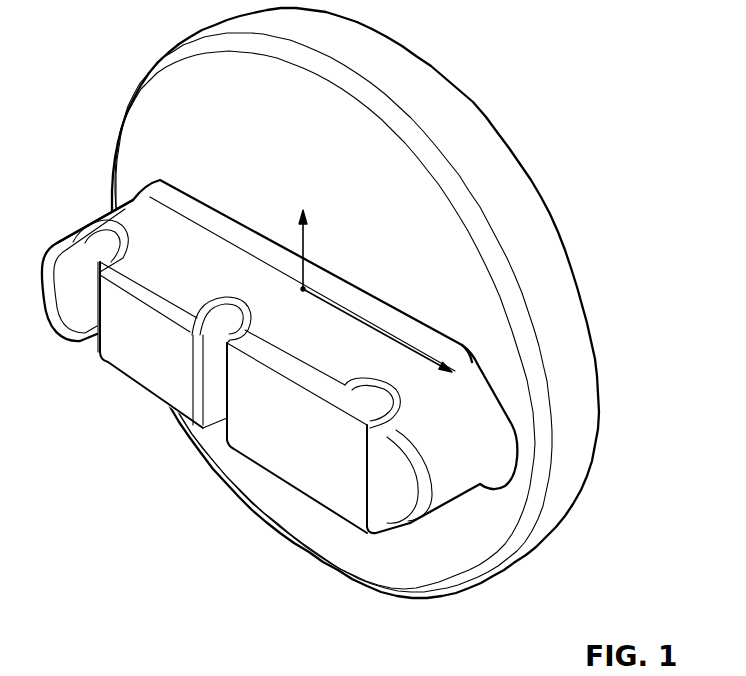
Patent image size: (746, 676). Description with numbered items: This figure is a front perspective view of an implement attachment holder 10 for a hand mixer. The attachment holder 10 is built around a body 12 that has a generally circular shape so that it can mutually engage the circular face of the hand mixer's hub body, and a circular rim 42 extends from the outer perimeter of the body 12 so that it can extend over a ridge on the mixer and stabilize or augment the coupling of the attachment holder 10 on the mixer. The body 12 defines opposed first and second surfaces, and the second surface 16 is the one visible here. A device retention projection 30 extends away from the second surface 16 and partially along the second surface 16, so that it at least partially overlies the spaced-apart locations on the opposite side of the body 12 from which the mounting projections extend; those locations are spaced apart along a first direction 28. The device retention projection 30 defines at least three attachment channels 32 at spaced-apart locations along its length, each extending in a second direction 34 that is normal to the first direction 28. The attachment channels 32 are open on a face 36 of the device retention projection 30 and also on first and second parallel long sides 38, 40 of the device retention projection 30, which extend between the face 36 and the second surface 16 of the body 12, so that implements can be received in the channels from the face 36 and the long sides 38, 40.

The implement attachment holder 10 is at (383, 318).
The body 12 is at (526, 307).
The second surface 16 is at (322, 156).
The first direction 28 is at (383, 333).
The device retention projection 30 is at (273, 500).
The attachment channels 32 is at (88, 330).
The second direction 34 is at (305, 250).
The face 36 is at (92, 295).
The first parallel long side 38 is at (175, 242).
The second parallel long side 40 is at (157, 428).
The circular rim 42 is at (583, 455).